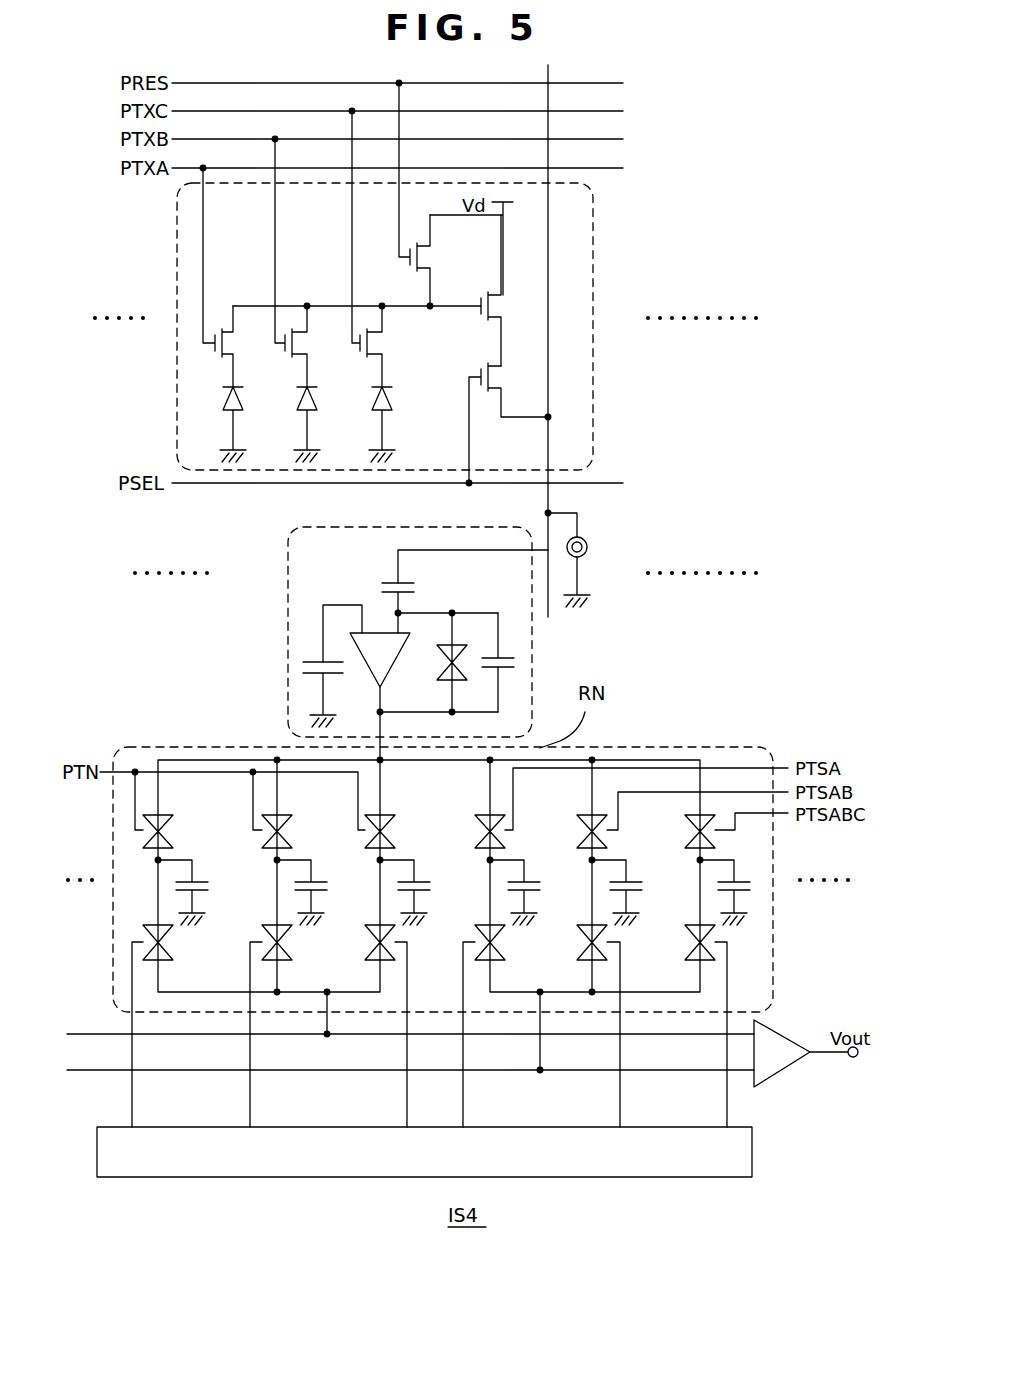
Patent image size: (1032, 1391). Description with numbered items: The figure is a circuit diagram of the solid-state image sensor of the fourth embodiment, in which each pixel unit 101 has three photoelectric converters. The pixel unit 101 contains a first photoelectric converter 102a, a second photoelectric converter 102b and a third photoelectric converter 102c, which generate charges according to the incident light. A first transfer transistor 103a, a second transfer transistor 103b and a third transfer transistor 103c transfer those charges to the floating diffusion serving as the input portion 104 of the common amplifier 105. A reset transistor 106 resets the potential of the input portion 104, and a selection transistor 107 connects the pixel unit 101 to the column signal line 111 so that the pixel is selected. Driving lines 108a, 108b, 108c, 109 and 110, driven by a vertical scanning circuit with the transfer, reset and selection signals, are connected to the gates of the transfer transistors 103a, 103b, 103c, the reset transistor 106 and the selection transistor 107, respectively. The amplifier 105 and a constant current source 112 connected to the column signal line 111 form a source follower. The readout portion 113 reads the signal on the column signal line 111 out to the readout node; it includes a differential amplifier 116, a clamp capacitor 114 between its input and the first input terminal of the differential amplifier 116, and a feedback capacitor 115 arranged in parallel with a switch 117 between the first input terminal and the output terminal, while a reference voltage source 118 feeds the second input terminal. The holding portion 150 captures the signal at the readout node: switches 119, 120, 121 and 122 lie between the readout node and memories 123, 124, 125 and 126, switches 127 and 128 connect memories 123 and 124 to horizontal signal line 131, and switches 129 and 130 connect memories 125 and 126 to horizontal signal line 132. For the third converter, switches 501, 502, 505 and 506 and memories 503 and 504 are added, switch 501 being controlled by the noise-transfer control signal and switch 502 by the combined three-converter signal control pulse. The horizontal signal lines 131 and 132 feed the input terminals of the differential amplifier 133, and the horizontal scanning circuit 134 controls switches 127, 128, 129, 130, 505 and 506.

The pixel unit 101 is at (593, 228).
The first photoelectric converter 102a is at (239, 403).
The second photoelectric converter 102b is at (313, 403).
The third photoelectric converter 102c is at (388, 403).
The first transfer transistor 103a is at (232, 344).
The second transfer transistor 103b is at (304, 344).
The third transfer transistor 103c is at (379, 344).
The input portion 104 is at (397, 304).
The amplifier 105 is at (500, 307).
The reset transistor 106 is at (434, 256).
The selection transistor 107 is at (500, 375).
The driving line 108a is at (623, 168).
The driving line 108b is at (623, 139).
The driving line 108c is at (623, 111).
The driving line 109 is at (623, 83).
The driving line 110 is at (623, 483).
The column signal line 111 is at (549, 497).
The constant current source 112 is at (588, 543).
The readout portion 113 is at (284, 570).
The clamp capacitor 114 is at (383, 585).
The feedback capacitor 115 is at (515, 655).
The differential amplifier 116 is at (352, 662).
The switch 117 is at (445, 665).
The reference voltage source 118 is at (300, 660).
The switch 119 is at (180, 808).
The switch 120 is at (292, 830).
The switch 121 is at (477, 830).
The switch 122 is at (579, 830).
The memory 123 is at (200, 880).
The memory 124 is at (319, 880).
The memory 125 is at (532, 880).
The memory 126 is at (634, 880).
The switch 127 is at (145, 932).
The switch 128 is at (262, 932).
The switch 129 is at (478, 932).
The switch 130 is at (580, 932).
The horizontal signal line 131 is at (85, 1032).
The horizontal signal line 132 is at (88, 1072).
The amplifier 133 is at (785, 1068).
The horizontal scanning circuit 134 is at (752, 1145).
The holding portion 150 is at (773, 848).
The switch 501 is at (396, 830).
The switch 502 is at (688, 822).
The memory 503 is at (422, 880).
The memory 504 is at (750, 885).
The switch 505 is at (368, 932).
The switch 506 is at (690, 932).